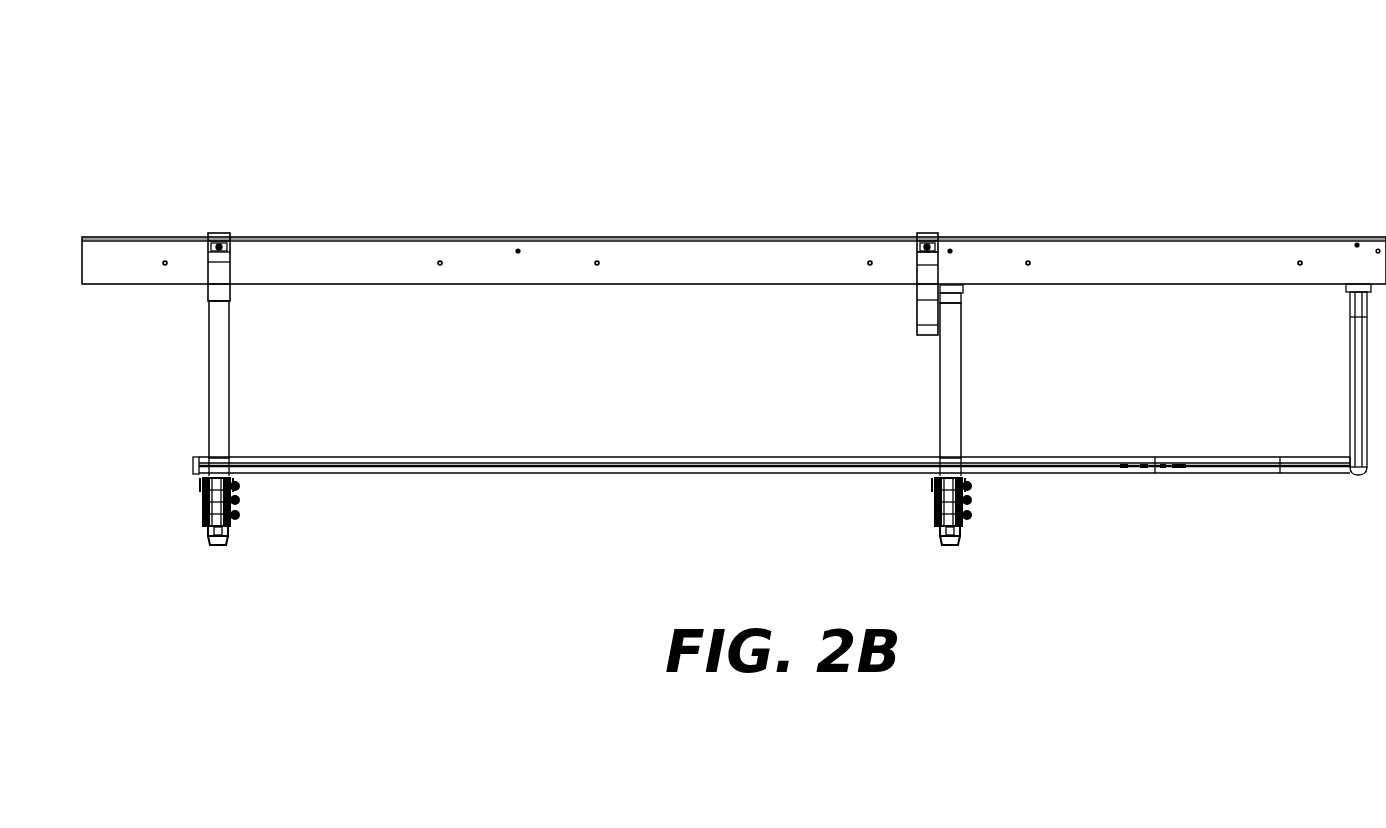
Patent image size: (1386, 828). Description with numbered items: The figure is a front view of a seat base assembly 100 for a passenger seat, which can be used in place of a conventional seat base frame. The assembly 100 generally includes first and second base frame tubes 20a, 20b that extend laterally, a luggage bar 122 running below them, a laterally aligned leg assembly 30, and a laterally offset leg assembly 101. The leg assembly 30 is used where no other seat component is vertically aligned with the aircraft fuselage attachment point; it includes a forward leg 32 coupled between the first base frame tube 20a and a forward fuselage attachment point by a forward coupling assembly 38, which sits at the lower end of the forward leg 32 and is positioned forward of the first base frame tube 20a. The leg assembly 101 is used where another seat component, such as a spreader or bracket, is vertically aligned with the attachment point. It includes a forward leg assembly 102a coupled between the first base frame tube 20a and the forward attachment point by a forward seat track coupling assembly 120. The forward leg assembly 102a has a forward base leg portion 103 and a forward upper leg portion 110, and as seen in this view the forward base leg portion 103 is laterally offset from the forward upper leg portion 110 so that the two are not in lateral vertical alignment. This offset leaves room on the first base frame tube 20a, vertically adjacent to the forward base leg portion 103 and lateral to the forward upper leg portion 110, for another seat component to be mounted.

The seat base assembly 100 is at (1197, 127).
The first base frame tube 20a is at (673, 253).
The second base frame tube 20b is at (630, 236).
The laterally aligned leg assembly 30 is at (218, 228).
The forward leg 32 is at (215, 367).
The forward coupling assembly 38 is at (240, 524).
The laterally offset leg assembly 101 is at (927, 228).
The forward leg assembly 102a is at (928, 362).
The forward base leg portion 103 is at (952, 389).
The forward upper leg portion 110 is at (930, 260).
The forward seat track coupling assembly 120 is at (968, 524).
The luggage bar 122 is at (630, 466).